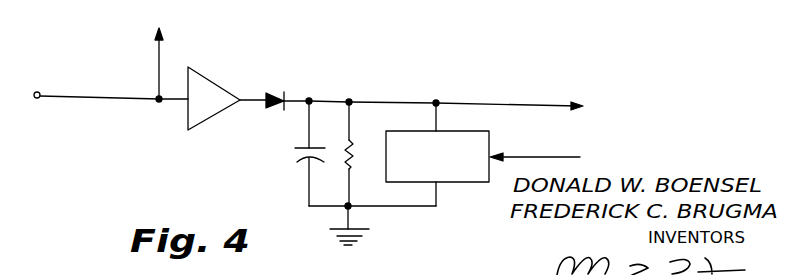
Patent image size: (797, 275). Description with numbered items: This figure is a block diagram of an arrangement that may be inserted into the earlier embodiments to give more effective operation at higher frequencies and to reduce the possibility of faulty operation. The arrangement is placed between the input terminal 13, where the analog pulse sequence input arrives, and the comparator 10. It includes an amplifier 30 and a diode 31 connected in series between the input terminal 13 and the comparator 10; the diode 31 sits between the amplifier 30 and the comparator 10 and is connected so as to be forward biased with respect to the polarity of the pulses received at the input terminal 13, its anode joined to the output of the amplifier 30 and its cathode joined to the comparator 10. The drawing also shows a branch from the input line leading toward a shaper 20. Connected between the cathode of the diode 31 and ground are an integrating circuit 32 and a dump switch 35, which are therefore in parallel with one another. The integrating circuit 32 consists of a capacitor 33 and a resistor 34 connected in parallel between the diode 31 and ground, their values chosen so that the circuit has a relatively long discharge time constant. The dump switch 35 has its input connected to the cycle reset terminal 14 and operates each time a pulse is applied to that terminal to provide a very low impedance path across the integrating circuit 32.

The comparator 10 is at (563, 106).
The input terminal 13 is at (38, 92).
The cycle reset terminal 14 is at (566, 156).
The shaper 20 is at (168, 54).
The amplifier 30 is at (222, 73).
The diode 31 is at (277, 90).
The integrating circuit 32 is at (340, 125).
The capacitor 33 is at (297, 159).
The resistor 34 is at (352, 168).
The dump switch 35 is at (458, 131).